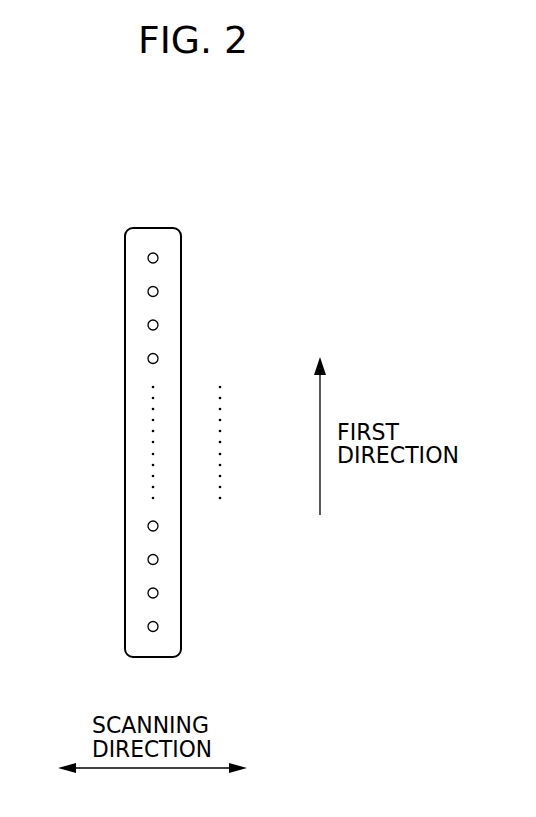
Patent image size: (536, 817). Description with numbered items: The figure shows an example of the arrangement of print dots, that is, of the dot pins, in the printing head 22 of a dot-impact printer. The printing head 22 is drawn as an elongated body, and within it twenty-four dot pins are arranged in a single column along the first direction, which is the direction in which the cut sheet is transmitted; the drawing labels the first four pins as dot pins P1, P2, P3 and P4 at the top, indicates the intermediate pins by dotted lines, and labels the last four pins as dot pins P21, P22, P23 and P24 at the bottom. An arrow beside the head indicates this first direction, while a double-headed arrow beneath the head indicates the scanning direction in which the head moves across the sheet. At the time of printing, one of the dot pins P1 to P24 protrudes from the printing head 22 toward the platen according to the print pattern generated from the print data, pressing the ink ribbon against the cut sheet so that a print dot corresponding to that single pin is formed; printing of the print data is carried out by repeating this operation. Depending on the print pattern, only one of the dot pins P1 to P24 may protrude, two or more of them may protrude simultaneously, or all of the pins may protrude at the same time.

The printing head 22 is at (241, 200).
The dot pin P1 is at (158, 258).
The dot pin P2 is at (158, 292).
The dot pin P3 is at (158, 325).
The dot pin P4 is at (158, 358).
The dot pin P21 is at (158, 526).
The dot pin P22 is at (158, 560).
The dot pin P23 is at (158, 593).
The dot pin P24 is at (158, 626).